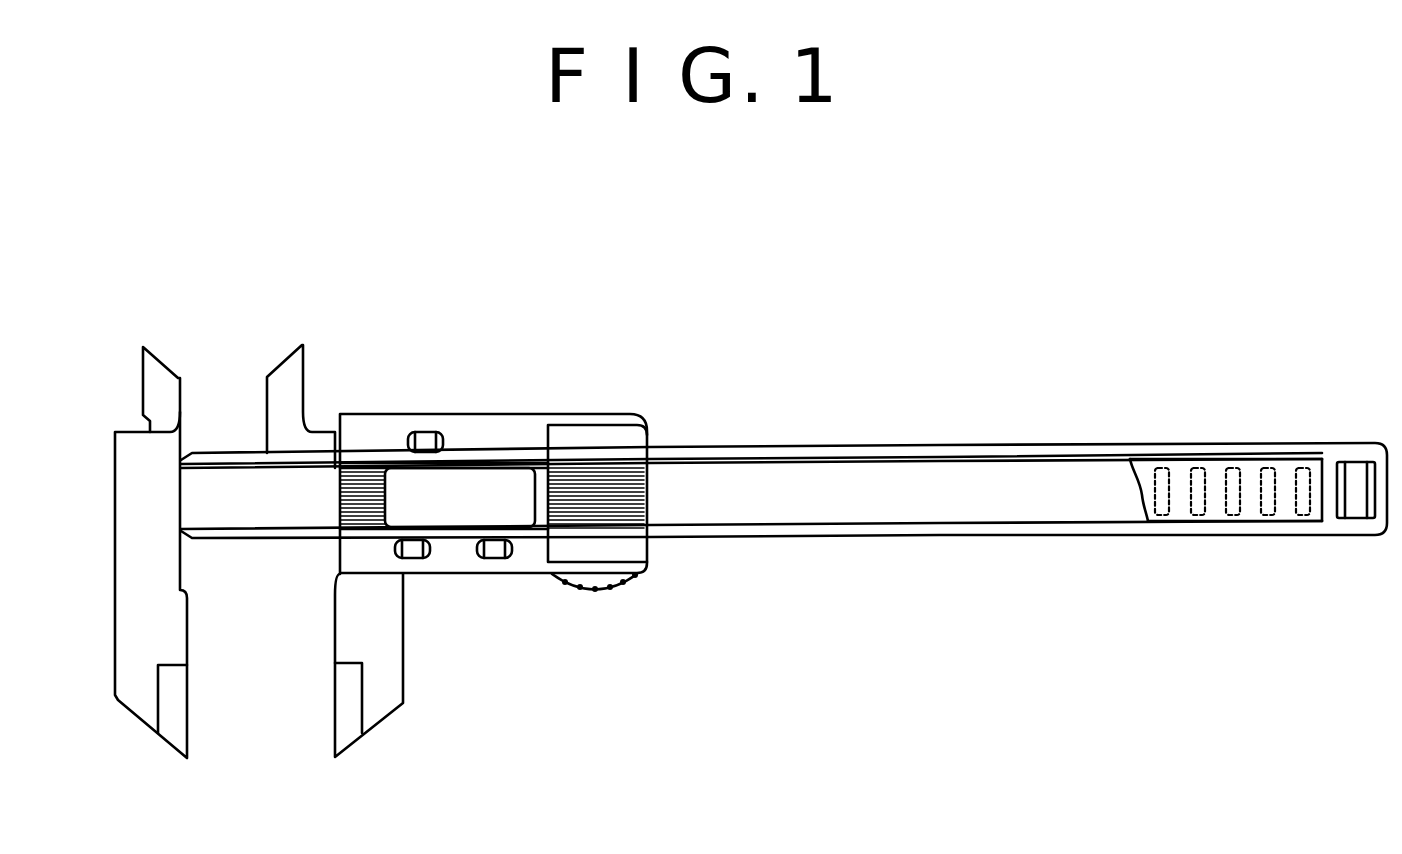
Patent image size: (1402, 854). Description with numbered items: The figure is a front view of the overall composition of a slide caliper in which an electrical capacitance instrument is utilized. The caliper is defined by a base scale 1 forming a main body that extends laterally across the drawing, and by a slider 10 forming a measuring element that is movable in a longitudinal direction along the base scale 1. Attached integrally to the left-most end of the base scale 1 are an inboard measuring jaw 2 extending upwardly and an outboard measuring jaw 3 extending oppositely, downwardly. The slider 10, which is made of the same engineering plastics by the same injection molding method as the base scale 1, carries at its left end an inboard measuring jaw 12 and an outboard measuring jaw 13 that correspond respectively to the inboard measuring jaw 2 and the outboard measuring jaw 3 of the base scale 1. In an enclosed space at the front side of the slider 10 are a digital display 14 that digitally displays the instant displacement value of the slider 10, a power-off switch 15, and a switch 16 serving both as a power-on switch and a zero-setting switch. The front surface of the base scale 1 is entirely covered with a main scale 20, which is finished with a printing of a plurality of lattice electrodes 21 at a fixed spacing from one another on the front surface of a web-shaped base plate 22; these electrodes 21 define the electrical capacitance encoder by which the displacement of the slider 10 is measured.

The base scale 1 is at (853, 417).
The inboard measuring jaw 2 is at (157, 387).
The outboard measuring jaw 3 is at (137, 690).
The slider 10 is at (614, 386).
The inboard measuring jaw 12 is at (292, 382).
The outboard measuring jaw 13 is at (385, 687).
The digital display 14 is at (468, 495).
The power-off switch 15 is at (413, 558).
The switch 16 is at (493, 558).
The main scale 20 is at (1272, 281).
The lattice electrodes 21 is at (1237, 470).
The base plate 22 is at (1082, 485).